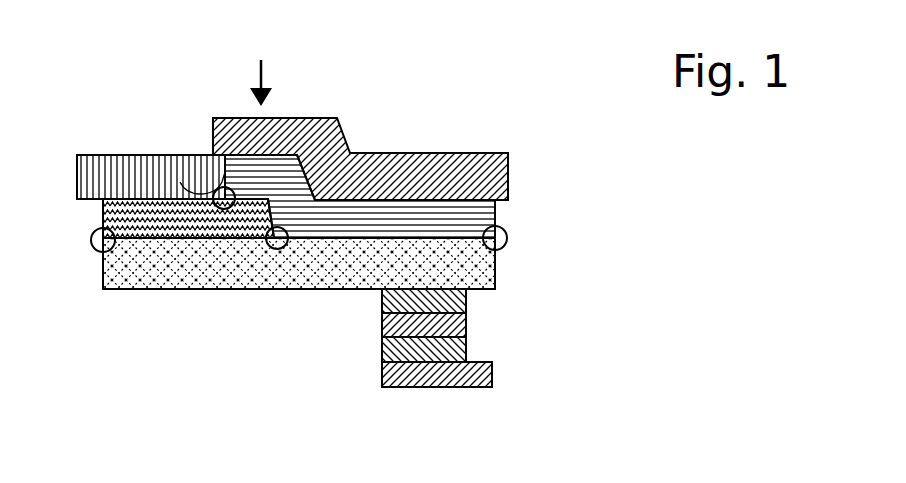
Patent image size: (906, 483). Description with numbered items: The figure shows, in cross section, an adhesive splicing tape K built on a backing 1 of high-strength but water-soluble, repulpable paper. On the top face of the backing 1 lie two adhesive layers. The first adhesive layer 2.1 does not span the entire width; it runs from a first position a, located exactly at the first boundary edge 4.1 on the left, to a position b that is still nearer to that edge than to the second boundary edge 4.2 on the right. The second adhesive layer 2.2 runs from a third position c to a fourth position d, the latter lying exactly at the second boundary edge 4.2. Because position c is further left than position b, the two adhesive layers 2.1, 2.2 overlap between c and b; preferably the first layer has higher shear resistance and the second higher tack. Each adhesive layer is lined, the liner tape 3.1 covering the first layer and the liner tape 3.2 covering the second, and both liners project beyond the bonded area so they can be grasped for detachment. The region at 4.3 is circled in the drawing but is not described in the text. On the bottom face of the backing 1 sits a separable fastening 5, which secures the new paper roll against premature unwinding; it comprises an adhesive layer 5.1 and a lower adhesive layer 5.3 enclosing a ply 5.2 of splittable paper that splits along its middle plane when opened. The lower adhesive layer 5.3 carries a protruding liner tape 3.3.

The backing 1 is at (187, 268).
The first adhesive layer 2.1 is at (185, 203).
The second adhesive layer 2.2 is at (387, 228).
The liner tape 3.1 is at (155, 155).
The liner tape 3.2 is at (410, 178).
The liner tape 3.3 is at (492, 375).
The first boundary edge 4.1 is at (103, 272).
The second boundary edge 4.2 is at (495, 265).
The third edge region 4.3 is at (216, 190).
The separable fastening 5 is at (433, 375).
The adhesive layer 5.1 is at (467, 302).
The ply of splittable paper 5.2 is at (438, 328).
The lower adhesive layer 5.3 is at (407, 352).
The first position a is at (91, 240).
The position b is at (280, 249).
The third position c is at (180, 182).
The fourth position d is at (507, 238).
The adhesive splicing tape K is at (261, 61).